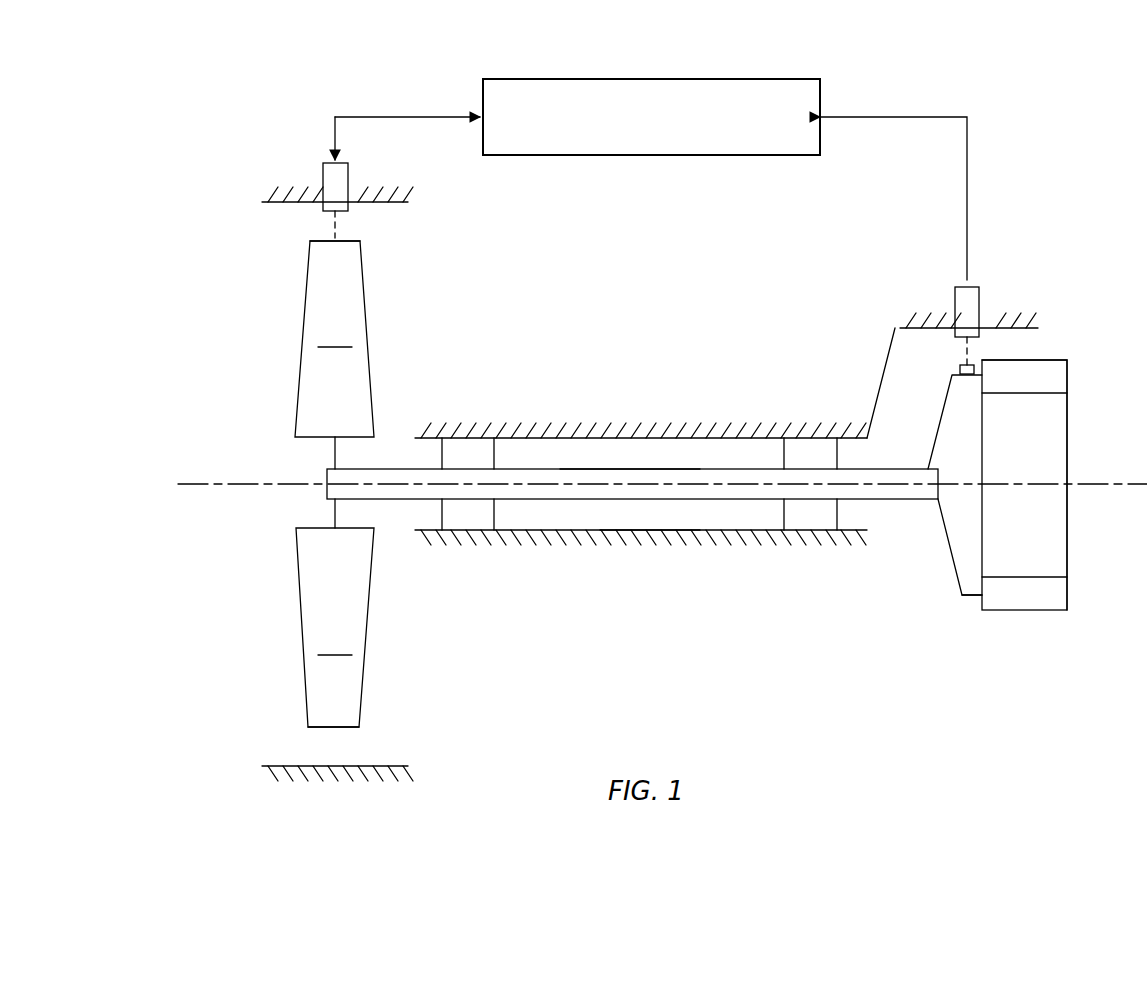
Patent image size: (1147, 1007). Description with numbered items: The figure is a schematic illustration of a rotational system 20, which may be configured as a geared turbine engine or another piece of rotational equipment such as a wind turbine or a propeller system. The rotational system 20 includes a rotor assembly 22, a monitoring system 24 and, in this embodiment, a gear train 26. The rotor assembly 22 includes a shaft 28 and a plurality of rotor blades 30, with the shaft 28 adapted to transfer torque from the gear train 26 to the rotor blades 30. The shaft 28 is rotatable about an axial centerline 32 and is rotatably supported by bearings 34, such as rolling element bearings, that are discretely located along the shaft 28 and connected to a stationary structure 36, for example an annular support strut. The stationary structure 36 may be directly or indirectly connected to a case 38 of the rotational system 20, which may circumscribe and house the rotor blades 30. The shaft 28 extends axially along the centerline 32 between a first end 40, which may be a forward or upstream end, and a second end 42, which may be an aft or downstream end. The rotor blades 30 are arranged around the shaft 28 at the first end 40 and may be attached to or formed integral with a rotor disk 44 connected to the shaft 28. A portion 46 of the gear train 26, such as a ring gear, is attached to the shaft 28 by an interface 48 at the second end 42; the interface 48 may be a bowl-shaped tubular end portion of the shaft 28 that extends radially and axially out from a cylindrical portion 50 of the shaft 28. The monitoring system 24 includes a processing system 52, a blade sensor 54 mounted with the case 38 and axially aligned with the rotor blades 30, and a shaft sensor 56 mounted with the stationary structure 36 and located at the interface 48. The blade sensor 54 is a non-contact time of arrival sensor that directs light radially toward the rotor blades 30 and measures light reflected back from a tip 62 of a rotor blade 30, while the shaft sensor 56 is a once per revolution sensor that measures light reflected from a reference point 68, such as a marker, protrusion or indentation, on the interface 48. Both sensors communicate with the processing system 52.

The rotational system 20 is at (265, 96).
The rotor assembly 22 is at (395, 445).
The monitoring system 24 is at (868, 82).
The gear train 26 is at (1070, 420).
The shaft 28 is at (395, 503).
The rotor blades 30 is at (334, 484).
The axial centerline 32 is at (205, 487).
The bearings 34 is at (475, 450).
The stationary structure 36 is at (653, 533).
The case 38 is at (275, 198).
The first end 40 is at (327, 493).
The second end 42 is at (965, 597).
The rotor disk 44 is at (335, 456).
The portion of the gear train 46 is at (1055, 372).
The interface 48 is at (938, 420).
The cylindrical portion 50 is at (630, 468).
The processing system 52 is at (678, 156).
The blade sensor 54 is at (348, 172).
The shaft sensor 56 is at (979, 295).
The tip 62 is at (352, 238).
The reference point 68 is at (960, 368).